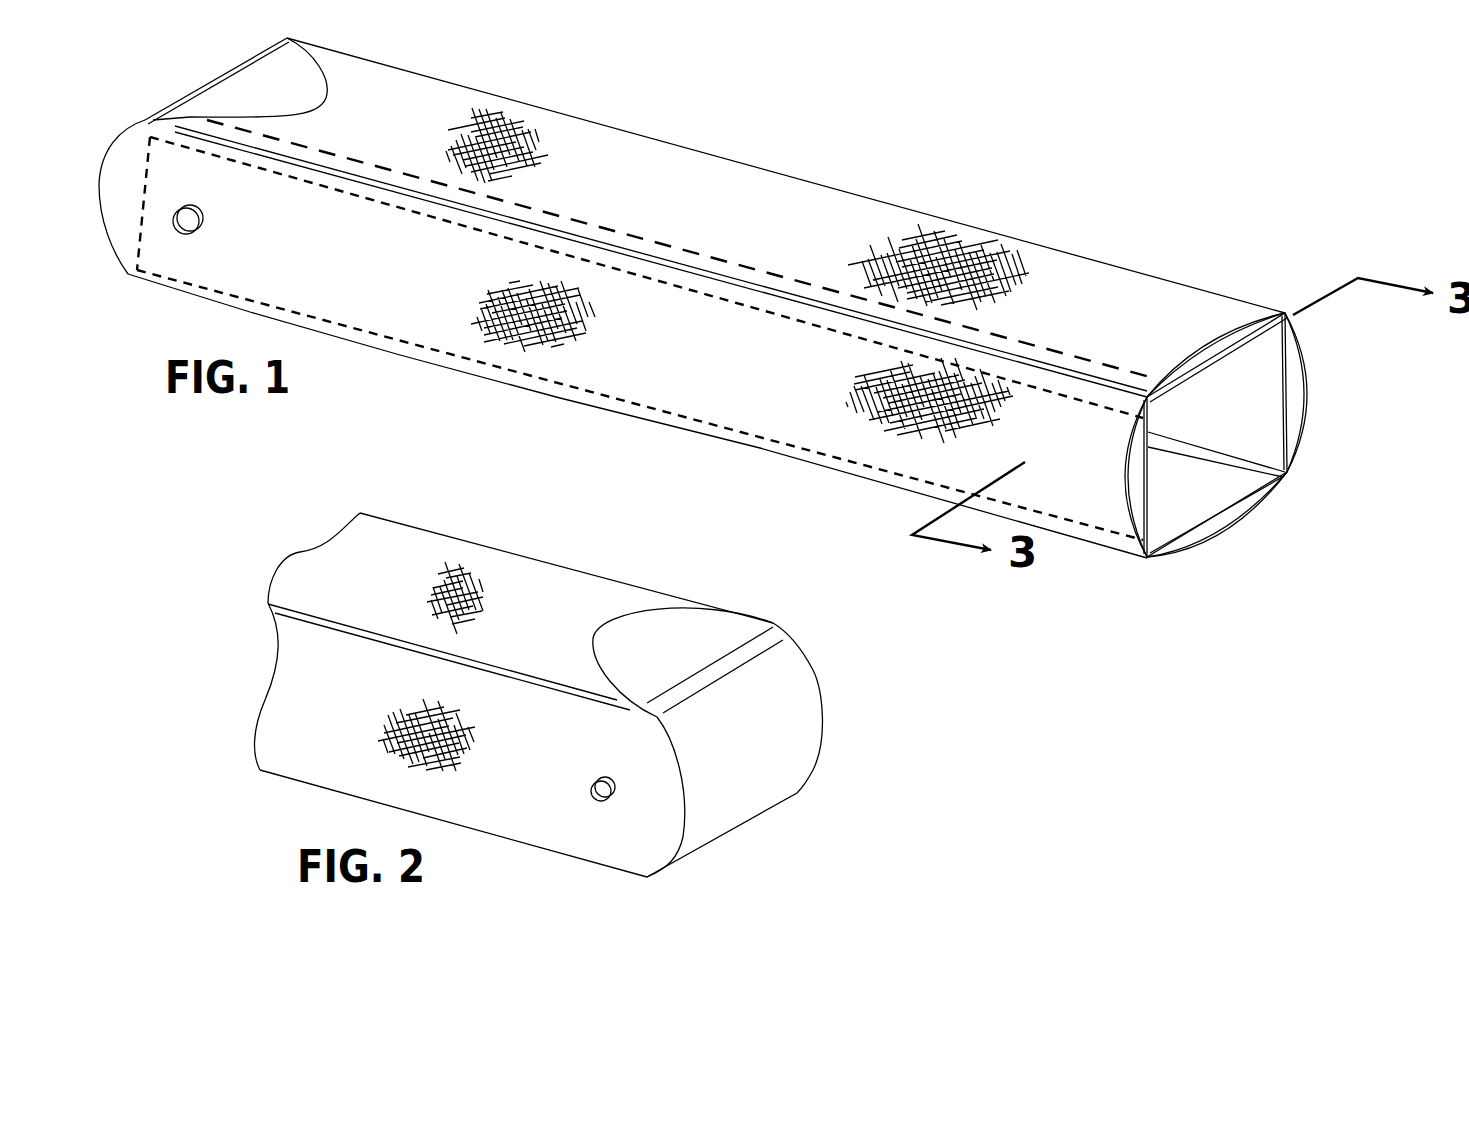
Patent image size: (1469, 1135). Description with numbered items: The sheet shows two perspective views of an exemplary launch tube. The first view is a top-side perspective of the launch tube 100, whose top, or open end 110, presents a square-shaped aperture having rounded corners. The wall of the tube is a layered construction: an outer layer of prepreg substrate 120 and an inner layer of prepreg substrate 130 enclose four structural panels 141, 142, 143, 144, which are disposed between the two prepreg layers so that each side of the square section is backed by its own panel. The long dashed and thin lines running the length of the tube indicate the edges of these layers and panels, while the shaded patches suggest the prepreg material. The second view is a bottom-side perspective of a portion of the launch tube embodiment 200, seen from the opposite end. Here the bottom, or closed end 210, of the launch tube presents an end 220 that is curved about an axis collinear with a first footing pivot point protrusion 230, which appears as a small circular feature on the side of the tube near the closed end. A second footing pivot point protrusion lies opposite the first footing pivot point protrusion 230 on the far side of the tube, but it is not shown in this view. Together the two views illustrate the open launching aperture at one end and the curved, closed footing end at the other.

In FIG. 1, the launch tube 100 is at (1040, 135).
In FIG. 1, the open end 110 is at (1285, 514).
In FIG. 1, the outer layer of prepreg substrate 120 is at (1254, 310).
In FIG. 1, the inner layer of prepreg substrate 130 is at (1197, 371).
In FIG. 1, the structural panel 141 is at (1298, 390).
In FIG. 1, the structural panel 142 is at (1213, 532).
In FIG. 1, the structural panel 143 is at (1139, 489).
In FIG. 1, the structural panel 144 is at (1215, 350).
In FIG. 2, the launch tube embodiment 200 is at (577, 548).
In FIG. 2, the closed end 210 is at (849, 762).
In FIG. 2, the curved end 220 is at (797, 692).
In FIG. 2, the first footing pivot point protrusion 230 is at (605, 797).